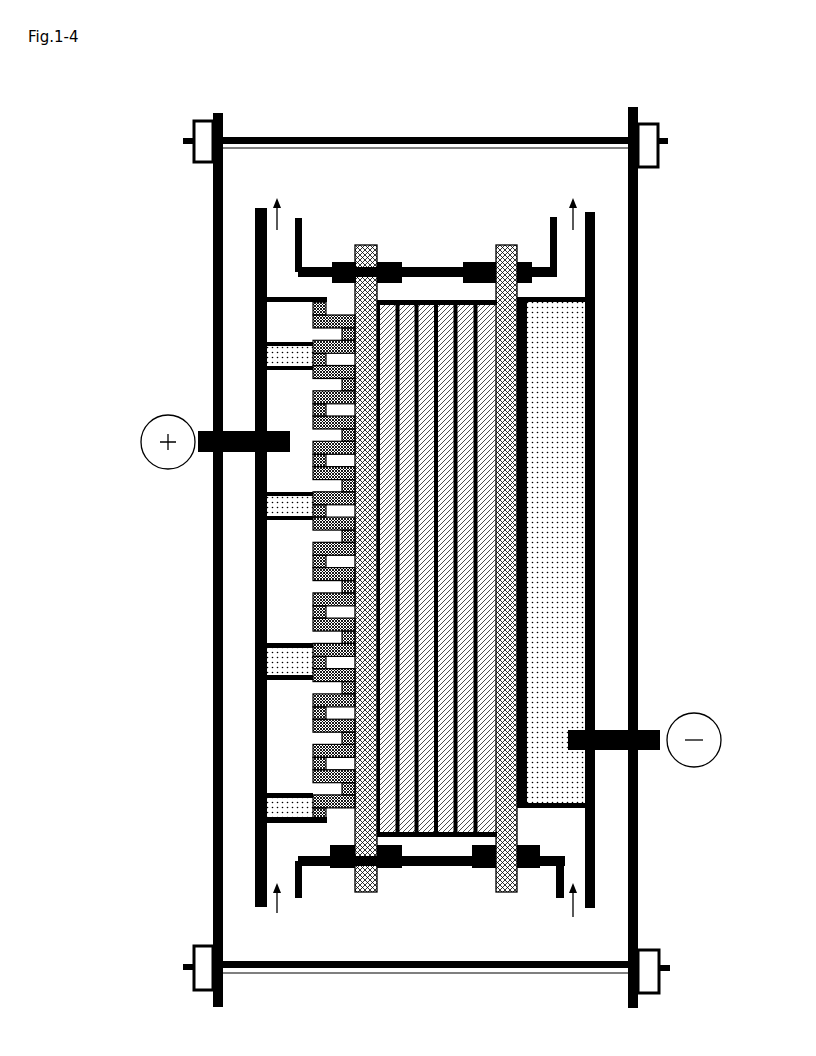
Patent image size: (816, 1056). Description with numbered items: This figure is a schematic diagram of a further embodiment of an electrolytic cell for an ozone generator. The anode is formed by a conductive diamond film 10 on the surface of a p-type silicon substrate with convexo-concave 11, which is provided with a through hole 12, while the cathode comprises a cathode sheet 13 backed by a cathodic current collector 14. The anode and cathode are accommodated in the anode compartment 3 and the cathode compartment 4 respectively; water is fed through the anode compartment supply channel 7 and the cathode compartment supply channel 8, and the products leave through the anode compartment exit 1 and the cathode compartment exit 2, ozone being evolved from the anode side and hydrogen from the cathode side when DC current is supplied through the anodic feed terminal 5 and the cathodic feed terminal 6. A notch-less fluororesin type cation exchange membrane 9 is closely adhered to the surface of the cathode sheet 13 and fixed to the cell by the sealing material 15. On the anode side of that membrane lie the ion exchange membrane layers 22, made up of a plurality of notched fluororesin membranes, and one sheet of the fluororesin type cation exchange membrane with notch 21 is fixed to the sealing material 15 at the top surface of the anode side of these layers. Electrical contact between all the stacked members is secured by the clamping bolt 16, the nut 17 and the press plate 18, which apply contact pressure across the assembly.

The anode compartment exit 1 is at (273, 252).
The cathode compartment exit 2 is at (572, 253).
The anode compartment 3 is at (327, 290).
The cathode compartment 4 is at (540, 282).
The anodic feed terminal 5 is at (198, 430).
The cathodic feed terminal 6 is at (645, 727).
The anode compartment supply channel 7 is at (280, 865).
The cathode compartment supply channel 8 is at (572, 868).
The notch-less fluororesin type cation exchange membrane 9 is at (528, 432).
The conductive diamond film 10 is at (320, 557).
The p-type silicon substrate with convexo-concave 11 is at (283, 717).
The through hole 12 is at (300, 510).
The cathode sheet 13 is at (530, 468).
The cathodic current collector 14 is at (565, 512).
The sealing material 15 is at (470, 262).
The clamping bolt 16 is at (308, 136).
The nut 17 is at (650, 138).
The press plate 18 is at (640, 808).
The fluororesin type cation exchange membrane with notch 21 is at (310, 787).
The ion exchange membrane layer 22 is at (397, 692).